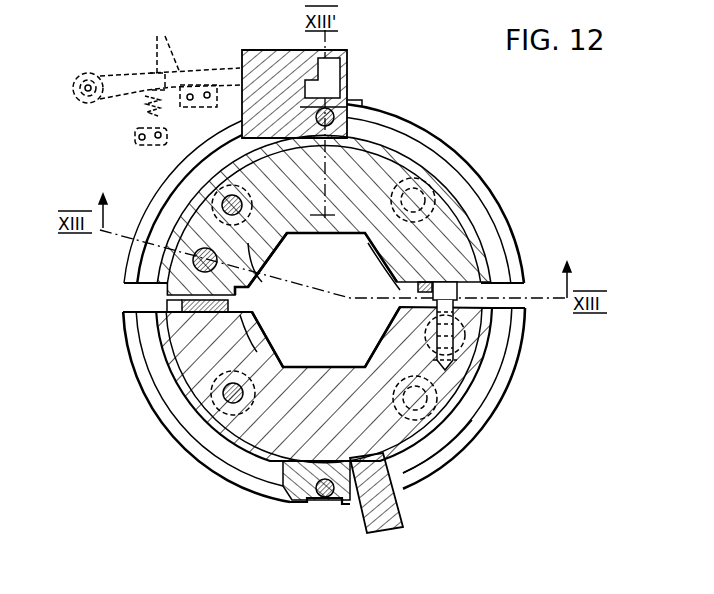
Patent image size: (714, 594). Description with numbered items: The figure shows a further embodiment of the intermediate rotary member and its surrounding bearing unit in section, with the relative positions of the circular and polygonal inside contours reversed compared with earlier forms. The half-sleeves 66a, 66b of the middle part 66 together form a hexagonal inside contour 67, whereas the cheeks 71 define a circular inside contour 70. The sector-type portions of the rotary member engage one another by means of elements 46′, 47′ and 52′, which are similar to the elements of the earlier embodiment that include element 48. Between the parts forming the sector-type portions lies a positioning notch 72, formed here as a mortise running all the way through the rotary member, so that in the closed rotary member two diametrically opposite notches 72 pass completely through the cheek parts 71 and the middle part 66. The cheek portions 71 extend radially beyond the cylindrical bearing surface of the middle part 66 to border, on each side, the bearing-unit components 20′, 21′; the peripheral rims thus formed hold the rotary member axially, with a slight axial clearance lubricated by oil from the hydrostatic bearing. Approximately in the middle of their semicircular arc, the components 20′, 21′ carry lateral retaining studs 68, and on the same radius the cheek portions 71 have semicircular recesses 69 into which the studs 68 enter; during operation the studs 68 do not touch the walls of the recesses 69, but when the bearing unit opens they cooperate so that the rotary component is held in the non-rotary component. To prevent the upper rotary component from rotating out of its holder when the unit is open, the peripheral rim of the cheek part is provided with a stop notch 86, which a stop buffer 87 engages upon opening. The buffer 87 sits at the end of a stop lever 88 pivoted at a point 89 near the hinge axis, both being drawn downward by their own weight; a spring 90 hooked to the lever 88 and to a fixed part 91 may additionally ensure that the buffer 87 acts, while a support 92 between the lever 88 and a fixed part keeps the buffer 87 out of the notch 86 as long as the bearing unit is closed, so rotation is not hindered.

The bearing-unit component 20′ is at (398, 520).
The bearing-unit component 21′ is at (262, 52).
The engagement element 46′ is at (497, 270).
The engagement element 47′ is at (477, 327).
The engagement element 48 is at (433, 330).
The engagement element 52′ is at (460, 367).
The middle part 66 is at (267, 440).
The half-sleeve 66a is at (470, 212).
The half-sleeve 66b is at (445, 412).
The hexagonal inside contour 67 is at (268, 258).
The stud 68 is at (335, 114).
The semicircular recess 69 is at (463, 175).
The circular inside contour 70 is at (275, 266).
The cheek 71 is at (407, 450).
The positioning notch 72 is at (403, 290).
The stop notch 86 is at (365, 100).
The stop buffer 87 is at (340, 70).
The stop lever 88 is at (162, 51).
The pivot point 89 is at (80, 106).
The spring 90 is at (143, 108).
The fixed part 91 is at (133, 150).
The support 92 is at (202, 95).